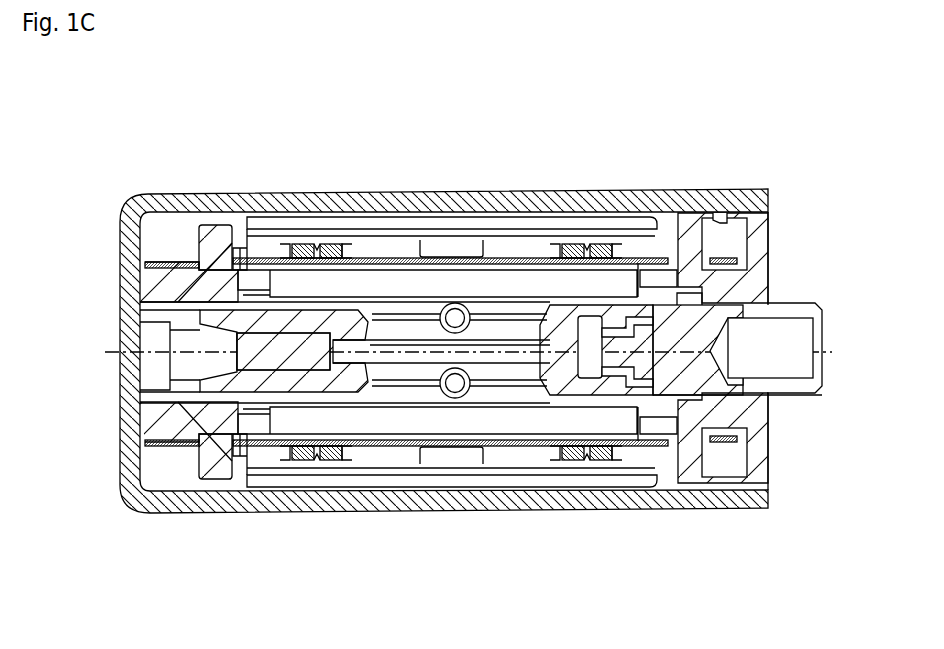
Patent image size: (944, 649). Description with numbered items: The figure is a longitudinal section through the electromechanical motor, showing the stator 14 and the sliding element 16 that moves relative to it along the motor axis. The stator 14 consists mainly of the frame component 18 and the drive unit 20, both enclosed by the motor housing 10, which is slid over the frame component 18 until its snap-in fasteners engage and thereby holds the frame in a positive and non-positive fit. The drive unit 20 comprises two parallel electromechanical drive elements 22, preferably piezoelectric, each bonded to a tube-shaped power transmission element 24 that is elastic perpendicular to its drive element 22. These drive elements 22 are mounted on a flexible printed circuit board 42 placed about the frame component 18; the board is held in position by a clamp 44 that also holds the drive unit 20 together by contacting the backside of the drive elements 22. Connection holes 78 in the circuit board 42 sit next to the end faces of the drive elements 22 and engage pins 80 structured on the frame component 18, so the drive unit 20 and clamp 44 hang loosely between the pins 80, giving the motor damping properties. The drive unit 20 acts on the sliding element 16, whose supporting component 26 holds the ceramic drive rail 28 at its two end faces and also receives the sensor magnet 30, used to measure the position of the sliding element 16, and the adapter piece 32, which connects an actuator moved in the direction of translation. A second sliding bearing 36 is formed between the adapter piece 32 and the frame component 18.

The motor housing 10 is at (450, 302).
The stator 14 is at (231, 283).
The sliding element 16 is at (254, 242).
The frame component 18 is at (180, 276).
The drive unit 20 is at (451, 276).
The electromechanical drive element 22 is at (408, 347).
The power transmission element 24 is at (479, 347).
The supporting component 26 is at (604, 243).
The drive rail 28 is at (451, 239).
The sensor magnet 30 is at (263, 343).
The adapter piece 32 is at (737, 243).
The second sliding bearing 36 is at (775, 298).
The flexible printed circuit board 42 is at (752, 197).
The clamp 44 is at (378, 232).
The connection hole 78 is at (726, 497).
The pin 80 is at (442, 347).